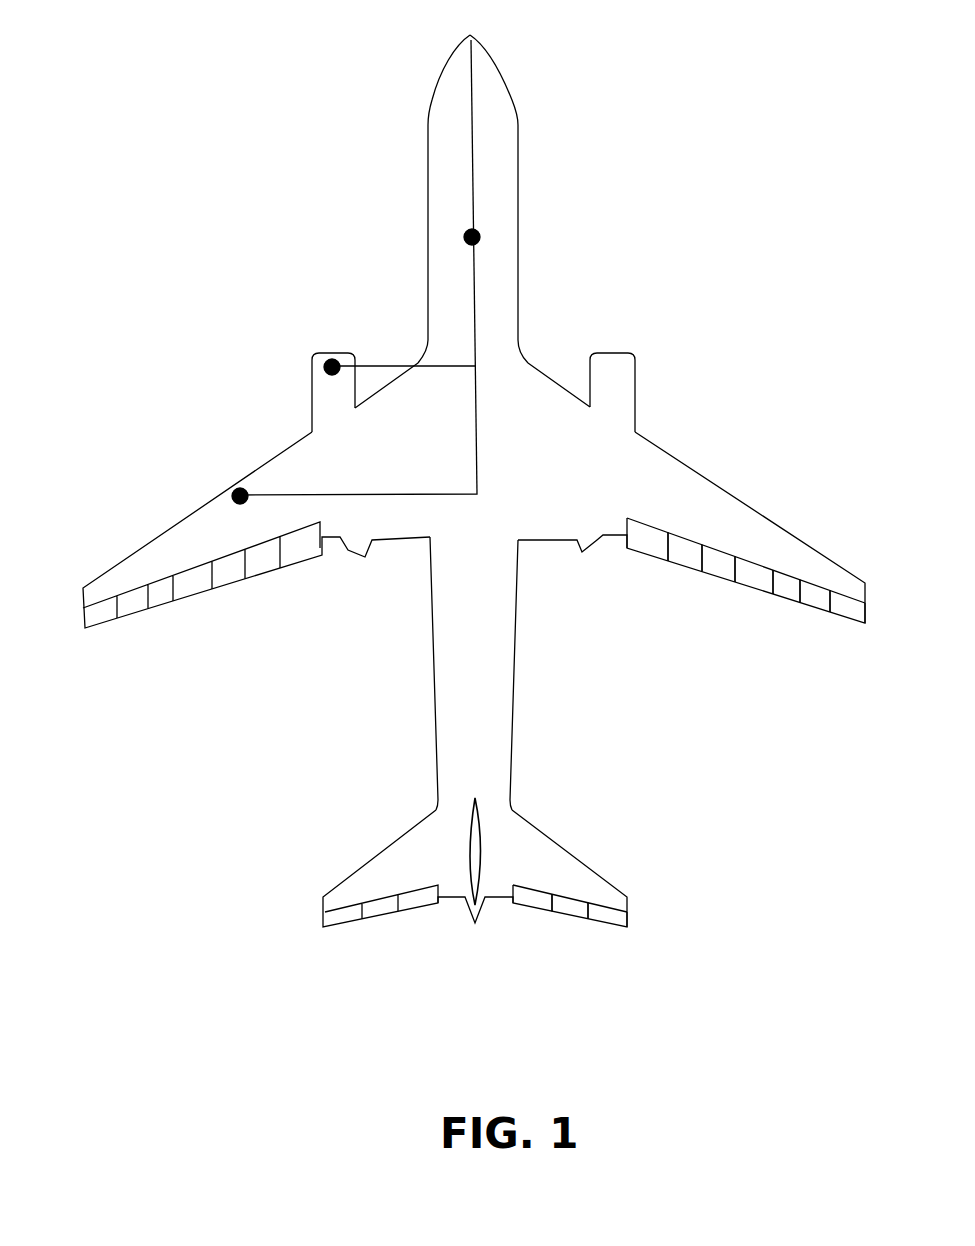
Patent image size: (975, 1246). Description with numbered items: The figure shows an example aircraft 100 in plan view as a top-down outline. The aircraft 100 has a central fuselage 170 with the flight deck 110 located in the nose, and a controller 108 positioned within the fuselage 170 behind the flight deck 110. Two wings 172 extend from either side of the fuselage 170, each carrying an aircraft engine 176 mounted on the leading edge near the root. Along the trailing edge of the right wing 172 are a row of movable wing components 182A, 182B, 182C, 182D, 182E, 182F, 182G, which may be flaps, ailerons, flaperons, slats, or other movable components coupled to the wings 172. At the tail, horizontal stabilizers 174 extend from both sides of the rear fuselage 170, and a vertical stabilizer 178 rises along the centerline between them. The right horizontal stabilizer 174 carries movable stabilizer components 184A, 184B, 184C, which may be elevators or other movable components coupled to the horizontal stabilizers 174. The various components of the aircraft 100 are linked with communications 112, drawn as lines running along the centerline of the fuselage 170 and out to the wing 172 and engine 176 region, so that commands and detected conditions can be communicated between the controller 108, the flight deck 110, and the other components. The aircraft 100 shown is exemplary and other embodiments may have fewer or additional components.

The aircraft 100 is at (433, 88).
The controller 108 is at (569, 239).
The flight deck 110 is at (531, 43).
The communications 112 is at (367, 284).
The fuselage 170 is at (427, 212).
The wings 172 is at (137, 548).
The horizontal stabilizers 174 is at (368, 868).
The aircraft engines 176 is at (315, 357).
The vertical stabilizer 178 is at (468, 857).
The movable wing component 182A is at (647, 557).
The movable wing component 182B is at (682, 568).
The movable wing component 182C is at (718, 578).
The movable wing component 182D is at (763, 592).
The movable wing component 182E is at (792, 595).
The movable wing component 182F is at (817, 605).
The movable wing component 182G is at (845, 618).
The movable stabilizer component 184A is at (528, 902).
The movable stabilizer component 184B is at (565, 912).
The movable stabilizer component 184C is at (610, 922).